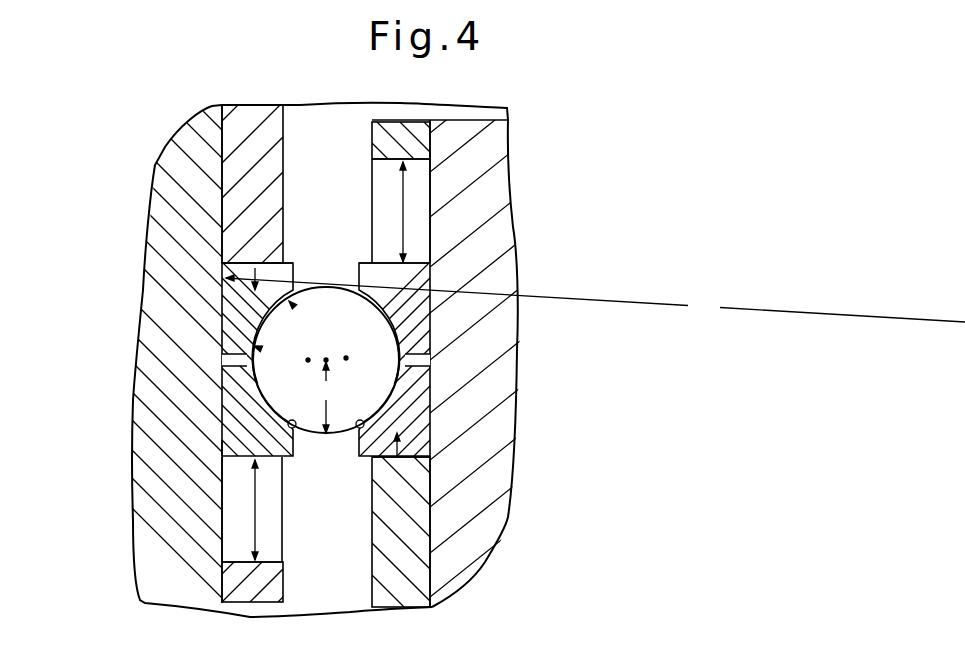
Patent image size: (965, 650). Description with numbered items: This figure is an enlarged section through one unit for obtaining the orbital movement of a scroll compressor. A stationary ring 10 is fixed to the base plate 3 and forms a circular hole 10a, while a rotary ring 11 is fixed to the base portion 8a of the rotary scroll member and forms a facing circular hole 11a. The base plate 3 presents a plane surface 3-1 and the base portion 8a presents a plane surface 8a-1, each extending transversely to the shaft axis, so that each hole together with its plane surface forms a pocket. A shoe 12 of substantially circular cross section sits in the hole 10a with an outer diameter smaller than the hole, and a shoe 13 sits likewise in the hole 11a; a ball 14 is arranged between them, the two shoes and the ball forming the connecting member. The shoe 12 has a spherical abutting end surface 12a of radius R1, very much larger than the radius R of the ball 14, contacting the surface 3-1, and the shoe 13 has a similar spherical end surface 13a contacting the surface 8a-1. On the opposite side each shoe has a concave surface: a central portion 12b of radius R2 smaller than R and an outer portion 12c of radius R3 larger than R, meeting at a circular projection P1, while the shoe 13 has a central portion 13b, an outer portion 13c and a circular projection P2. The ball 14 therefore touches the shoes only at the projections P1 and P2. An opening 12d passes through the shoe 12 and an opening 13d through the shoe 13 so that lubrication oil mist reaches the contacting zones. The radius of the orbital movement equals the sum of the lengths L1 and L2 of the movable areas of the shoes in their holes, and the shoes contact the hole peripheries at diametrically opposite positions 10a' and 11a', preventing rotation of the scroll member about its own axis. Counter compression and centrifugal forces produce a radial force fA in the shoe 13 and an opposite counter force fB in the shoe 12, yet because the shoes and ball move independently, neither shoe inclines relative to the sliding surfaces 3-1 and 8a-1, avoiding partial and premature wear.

The base plate 3 is at (160, 372).
The plane surface 3-1 is at (222, 503).
The base portion 8a is at (505, 187).
The plane surface 8a-1 is at (428, 224).
The stationary ring 10 is at (273, 213).
The hole 10a is at (184, 550).
The contact position 10a' is at (189, 257).
The rotary ring 11 is at (378, 530).
The hole 11a is at (466, 165).
The contact position 11a' is at (474, 470).
The shoe 12 is at (287, 460).
The spherical abutting end surface 12a is at (222, 447).
The first central portion 12b is at (255, 385).
The second portion 12c is at (296, 433).
The opening 12d is at (222, 358).
The shoe 13 is at (363, 460).
The spherical end surface 13a is at (430, 270).
The first central portion 13b is at (405, 351).
The second portion 13c is at (359, 436).
The opening 13d is at (430, 364).
The ball 14 is at (336, 288).
The radius of the ball R is at (325, 395).
The radius of the end surface R1 is at (595, 298).
The radius of the central portion R2 is at (306, 360).
The radius of the second portion R3 is at (344, 356).
The length of the movable area L1 is at (264, 510).
The length of the movable area L2 is at (392, 212).
The circular projection P1 is at (245, 308).
The circular projection P2 is at (385, 308).
The radial force fA is at (407, 453).
The counter radial force fB is at (255, 268).